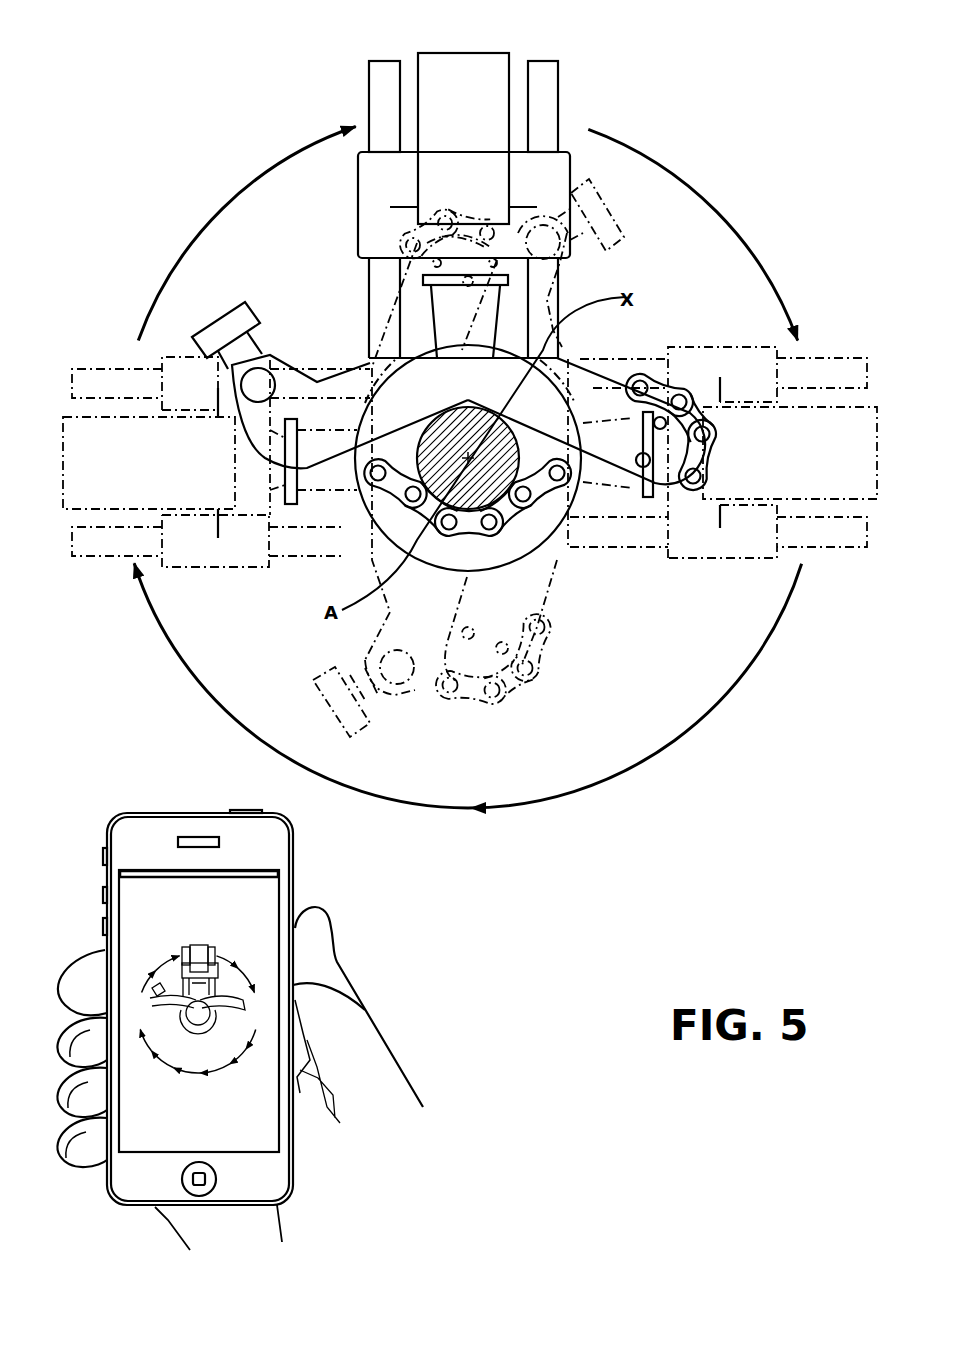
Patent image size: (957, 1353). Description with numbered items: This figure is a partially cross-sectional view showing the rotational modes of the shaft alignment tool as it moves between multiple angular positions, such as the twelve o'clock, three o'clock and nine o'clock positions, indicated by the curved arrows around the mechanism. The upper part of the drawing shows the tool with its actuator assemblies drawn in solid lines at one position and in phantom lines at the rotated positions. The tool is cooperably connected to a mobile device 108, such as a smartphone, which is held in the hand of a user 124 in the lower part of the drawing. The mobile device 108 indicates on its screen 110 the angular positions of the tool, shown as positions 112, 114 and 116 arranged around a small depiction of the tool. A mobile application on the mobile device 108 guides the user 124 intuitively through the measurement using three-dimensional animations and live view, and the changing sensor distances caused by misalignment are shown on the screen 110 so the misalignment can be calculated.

The mobile device 108 is at (293, 850).
The screen 110 is at (133, 908).
The angular position 112 is at (53, 428).
The angular position 114 is at (510, 96).
The angular position 116 is at (877, 440).
The user 124 is at (393, 1055).